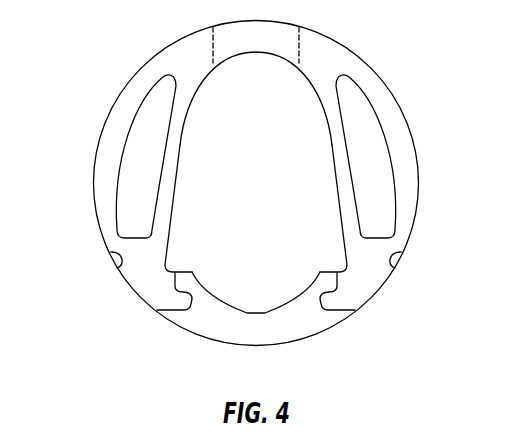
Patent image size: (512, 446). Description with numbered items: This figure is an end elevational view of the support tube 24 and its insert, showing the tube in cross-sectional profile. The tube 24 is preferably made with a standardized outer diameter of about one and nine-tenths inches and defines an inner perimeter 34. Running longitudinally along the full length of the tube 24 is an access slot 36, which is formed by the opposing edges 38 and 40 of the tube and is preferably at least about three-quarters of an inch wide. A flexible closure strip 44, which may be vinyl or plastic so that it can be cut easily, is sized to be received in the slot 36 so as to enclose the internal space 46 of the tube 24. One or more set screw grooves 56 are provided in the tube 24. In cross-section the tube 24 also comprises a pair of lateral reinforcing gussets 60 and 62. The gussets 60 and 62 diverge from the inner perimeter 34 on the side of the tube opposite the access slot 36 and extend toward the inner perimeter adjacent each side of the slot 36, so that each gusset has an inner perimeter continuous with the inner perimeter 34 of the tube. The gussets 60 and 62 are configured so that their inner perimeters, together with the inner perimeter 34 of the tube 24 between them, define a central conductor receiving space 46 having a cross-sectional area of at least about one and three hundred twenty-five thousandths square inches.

The support tube 24 is at (278, 200).
The inner perimeter 34 is at (255, 54).
The access slot 36 is at (255, 310).
The opposing edge 38 is at (188, 306).
The opposing edge 40 is at (323, 306).
The flexible closure strip 44 is at (290, 344).
The internal space 46 is at (256, 170).
The set screw groove 56 is at (113, 260).
The lateral reinforcing gusset 60 is at (350, 163).
The lateral reinforcing gusset 62 is at (162, 163).